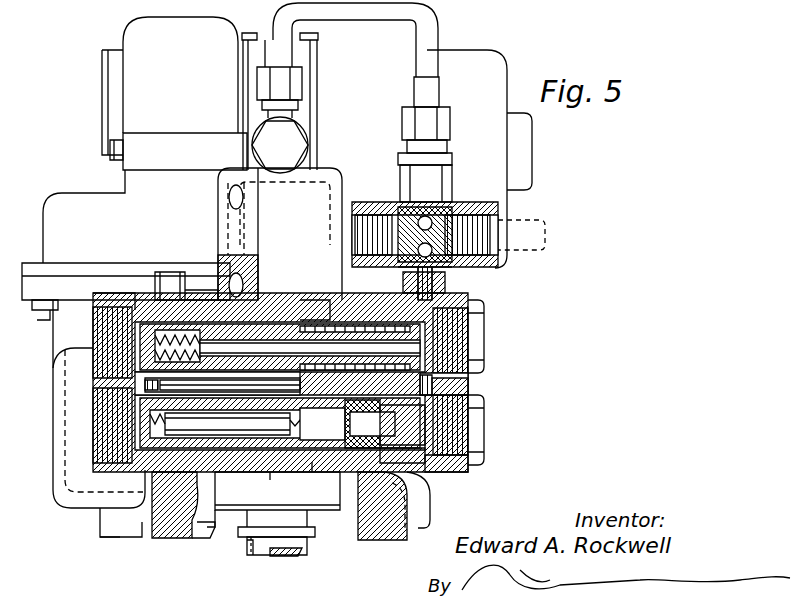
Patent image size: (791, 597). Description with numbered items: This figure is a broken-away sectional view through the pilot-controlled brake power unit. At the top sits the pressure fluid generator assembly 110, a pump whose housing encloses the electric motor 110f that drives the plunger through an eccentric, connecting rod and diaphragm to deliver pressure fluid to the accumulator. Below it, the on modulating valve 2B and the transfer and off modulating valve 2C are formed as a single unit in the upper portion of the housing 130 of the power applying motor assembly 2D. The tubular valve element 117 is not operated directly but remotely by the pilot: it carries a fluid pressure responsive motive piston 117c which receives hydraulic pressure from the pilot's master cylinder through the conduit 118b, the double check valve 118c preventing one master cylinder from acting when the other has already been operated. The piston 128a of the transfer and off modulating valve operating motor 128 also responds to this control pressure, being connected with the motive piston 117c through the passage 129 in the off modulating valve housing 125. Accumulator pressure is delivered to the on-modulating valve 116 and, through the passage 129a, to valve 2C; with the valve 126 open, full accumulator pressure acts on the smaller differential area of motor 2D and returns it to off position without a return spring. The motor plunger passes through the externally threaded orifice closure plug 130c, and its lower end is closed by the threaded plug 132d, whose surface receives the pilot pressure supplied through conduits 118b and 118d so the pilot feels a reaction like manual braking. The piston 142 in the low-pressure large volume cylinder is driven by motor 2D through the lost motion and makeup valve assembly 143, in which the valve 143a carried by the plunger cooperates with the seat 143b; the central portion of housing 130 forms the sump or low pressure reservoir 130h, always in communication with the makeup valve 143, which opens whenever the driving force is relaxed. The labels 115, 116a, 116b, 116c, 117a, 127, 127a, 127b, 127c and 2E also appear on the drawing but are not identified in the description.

The pressure fluid generator assembly 110 is at (68, 190).
The electric motor 110f is at (508, 62).
The valve body 115 is at (468, 296).
The on-modulating valve 116 is at (155, 296).
The passage 116a is at (215, 296).
The bracket hatched portion 116b is at (258, 295).
The flange 116c is at (97, 300).
The tubular valve element 117 is at (382, 286).
The passage 117a is at (312, 300).
The motive piston 117c is at (458, 330).
The conduit 118b is at (545, 241).
The double check valve 118c is at (457, 197).
The conduit 118d is at (432, 18).
The off modulating valve housing 125 is at (468, 464).
The valve 126 is at (385, 482).
The lower housing 127 is at (232, 472).
The passage 127a is at (318, 468).
The passage 127b is at (275, 472).
The leg 127c is at (180, 477).
The transfer and off modulating valve operating motor 128 is at (427, 452).
The piston 128a is at (440, 432).
The passage 129 is at (455, 380).
The passage 129a is at (148, 390).
The housing 130 is at (342, 182).
The orifice closure plug 130c is at (262, 517).
The sump or low pressure reservoir 130h is at (215, 508).
The threaded plug 132d is at (285, 557).
The piston 142 is at (249, 553).
The lost motion and makeup valve assembly 143 is at (316, 538).
The valve 143a is at (320, 532).
The seat 143b is at (250, 538).
The on modulating valve 2B is at (486, 345).
The transfer and off modulating valve 2C is at (486, 425).
The power applying motor assembly 2D is at (330, 168).
The section line 2E is at (100, 537).